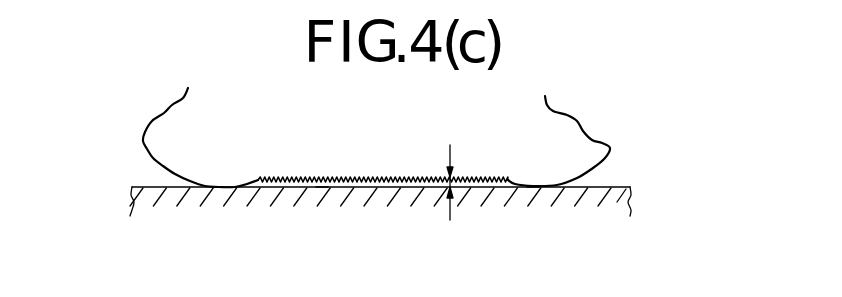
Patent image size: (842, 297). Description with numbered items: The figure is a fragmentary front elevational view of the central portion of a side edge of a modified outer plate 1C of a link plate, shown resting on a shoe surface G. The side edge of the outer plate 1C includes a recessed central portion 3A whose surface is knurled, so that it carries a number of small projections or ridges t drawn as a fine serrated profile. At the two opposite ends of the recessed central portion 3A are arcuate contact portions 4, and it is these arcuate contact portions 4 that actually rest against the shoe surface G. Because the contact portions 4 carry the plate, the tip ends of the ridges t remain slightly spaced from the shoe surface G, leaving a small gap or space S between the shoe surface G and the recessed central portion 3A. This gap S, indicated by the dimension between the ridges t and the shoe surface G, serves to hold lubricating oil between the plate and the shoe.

The outer plate 1C is at (156, 157).
The recessed central portion 3A is at (505, 166).
The arcuate contact portions 4 is at (217, 188).
The ridges t is at (322, 188).
The gap S is at (451, 202).
The shoe surface G is at (614, 186).